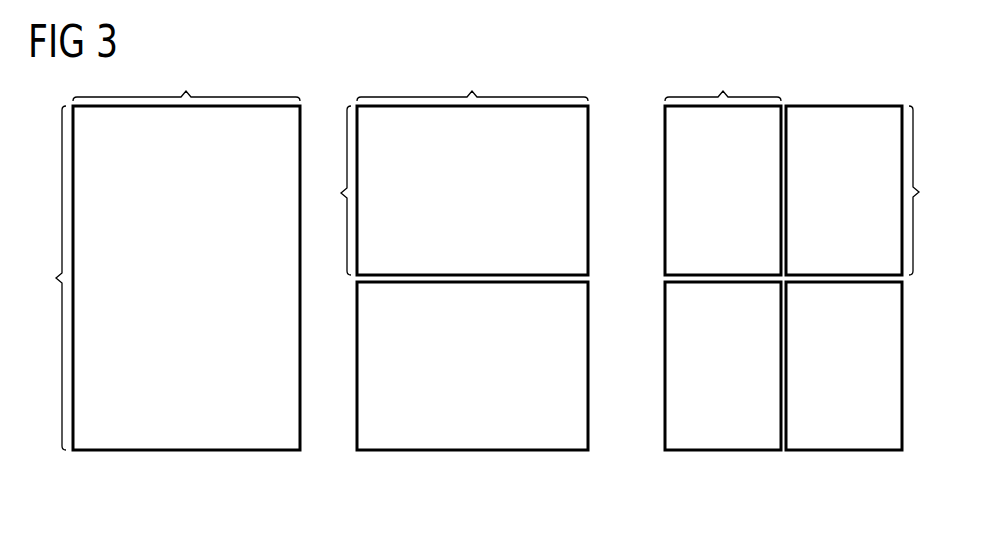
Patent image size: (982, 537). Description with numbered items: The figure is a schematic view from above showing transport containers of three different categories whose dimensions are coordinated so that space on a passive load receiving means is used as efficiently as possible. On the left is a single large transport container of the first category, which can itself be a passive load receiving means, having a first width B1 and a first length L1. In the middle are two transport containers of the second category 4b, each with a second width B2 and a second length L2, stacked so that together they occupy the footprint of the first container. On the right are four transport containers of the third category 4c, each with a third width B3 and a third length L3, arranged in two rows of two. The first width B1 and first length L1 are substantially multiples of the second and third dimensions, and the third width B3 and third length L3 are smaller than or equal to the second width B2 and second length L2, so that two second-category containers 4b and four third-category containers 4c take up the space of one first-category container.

The transport container of the second category 4b is at (472, 442).
The transport container of the third category 4c is at (675, 157).
The first width B1 is at (186, 81).
The second width B2 is at (472, 81).
The third width B3 is at (723, 81).
The first length L1 is at (48, 278).
The second length L2 is at (334, 190).
The third length L3 is at (928, 190).